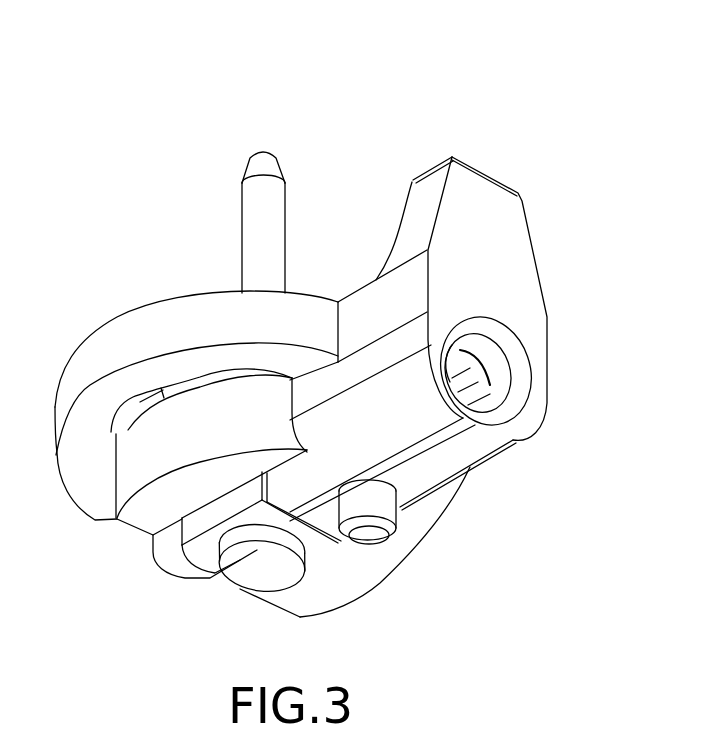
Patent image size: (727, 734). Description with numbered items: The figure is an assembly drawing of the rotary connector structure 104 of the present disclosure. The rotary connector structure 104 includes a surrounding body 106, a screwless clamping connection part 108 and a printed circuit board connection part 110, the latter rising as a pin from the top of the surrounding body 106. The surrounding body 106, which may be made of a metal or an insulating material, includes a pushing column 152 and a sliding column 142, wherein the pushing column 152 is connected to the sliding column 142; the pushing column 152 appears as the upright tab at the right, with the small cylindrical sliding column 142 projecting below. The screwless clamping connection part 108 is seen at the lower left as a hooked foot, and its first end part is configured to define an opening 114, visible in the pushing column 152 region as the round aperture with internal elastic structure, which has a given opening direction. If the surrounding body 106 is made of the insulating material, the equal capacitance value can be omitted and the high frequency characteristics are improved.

The rotary connector structure 104 is at (310, 43).
The surrounding body 106 is at (141, 300).
The screwless clamping connection part 108 is at (167, 563).
The printed circuit board connection part 110 is at (224, 212).
The opening 114 is at (483, 373).
The sliding column 142 is at (369, 537).
The pushing column 152 is at (513, 227).